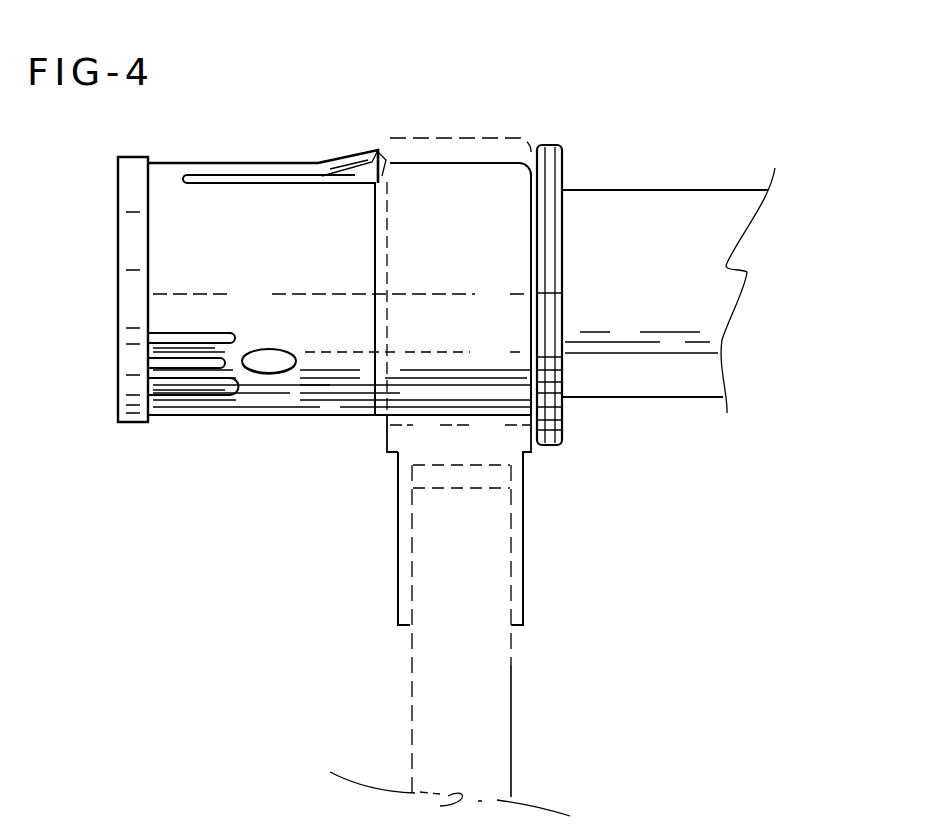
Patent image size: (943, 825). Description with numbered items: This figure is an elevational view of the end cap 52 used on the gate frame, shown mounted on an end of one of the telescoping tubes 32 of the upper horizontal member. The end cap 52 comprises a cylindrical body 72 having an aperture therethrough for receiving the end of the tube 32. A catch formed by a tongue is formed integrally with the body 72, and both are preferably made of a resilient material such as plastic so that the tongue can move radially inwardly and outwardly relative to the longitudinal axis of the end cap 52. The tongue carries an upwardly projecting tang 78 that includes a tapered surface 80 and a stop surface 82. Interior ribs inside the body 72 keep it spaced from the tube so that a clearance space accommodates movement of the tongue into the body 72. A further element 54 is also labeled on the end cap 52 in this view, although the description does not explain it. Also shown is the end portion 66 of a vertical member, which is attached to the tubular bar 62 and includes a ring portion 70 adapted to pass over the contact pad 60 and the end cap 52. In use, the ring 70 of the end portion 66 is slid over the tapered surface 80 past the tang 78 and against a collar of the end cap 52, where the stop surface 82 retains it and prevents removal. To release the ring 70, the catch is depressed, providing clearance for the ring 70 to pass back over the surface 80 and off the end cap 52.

The tube 32 is at (678, 190).
The end cap 52 is at (201, 417).
The button 54 is at (272, 364).
The contact pad 60 is at (131, 392).
The tubular bar 62 is at (511, 690).
The end portion 66 is at (393, 465).
The ring portion 70 is at (472, 137).
The cylindrical body 72 is at (180, 264).
The tang 78 is at (318, 162).
The tapered surface 80 is at (356, 148).
The stop surface 82 is at (385, 163).